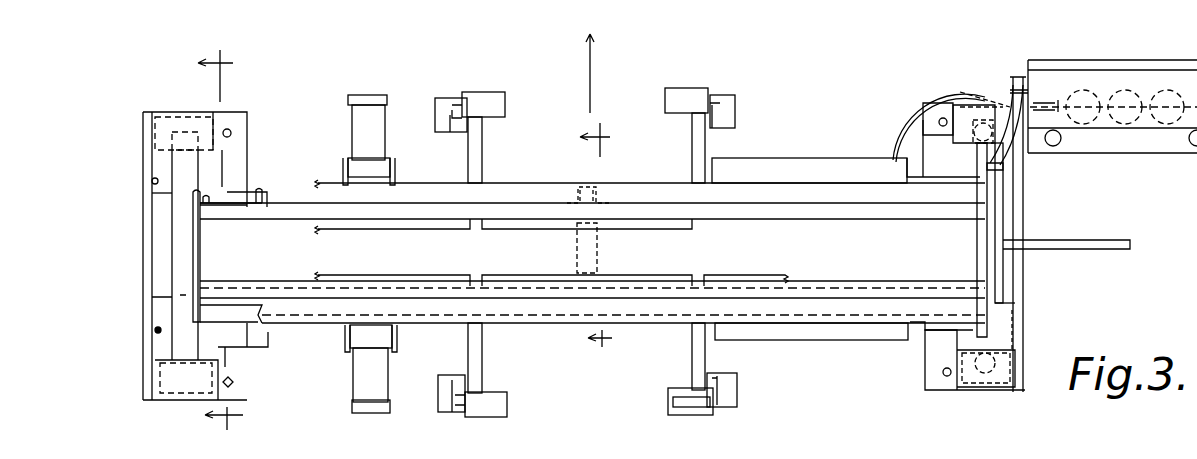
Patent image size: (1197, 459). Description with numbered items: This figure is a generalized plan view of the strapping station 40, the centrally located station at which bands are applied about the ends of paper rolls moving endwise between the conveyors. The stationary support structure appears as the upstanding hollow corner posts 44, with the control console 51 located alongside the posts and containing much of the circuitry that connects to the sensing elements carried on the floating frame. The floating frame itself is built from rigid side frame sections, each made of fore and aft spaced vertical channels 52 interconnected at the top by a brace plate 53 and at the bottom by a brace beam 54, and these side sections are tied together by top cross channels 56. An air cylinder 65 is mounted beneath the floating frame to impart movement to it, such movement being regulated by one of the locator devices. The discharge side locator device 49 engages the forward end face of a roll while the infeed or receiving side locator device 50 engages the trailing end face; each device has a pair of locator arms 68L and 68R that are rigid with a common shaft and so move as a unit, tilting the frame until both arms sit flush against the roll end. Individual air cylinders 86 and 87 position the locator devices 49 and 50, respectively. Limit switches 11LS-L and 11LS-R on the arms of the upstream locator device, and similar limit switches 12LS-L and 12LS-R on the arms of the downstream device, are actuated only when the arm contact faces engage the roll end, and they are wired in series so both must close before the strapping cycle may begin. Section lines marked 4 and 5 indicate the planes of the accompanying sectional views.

The strapping station 40 is at (1050, 200).
The upstanding hollow corner posts 44 is at (175, 112).
The discharge side locator device 49 is at (712, 140).
The infeed or receiving side locator device 50 is at (710, 358).
The control console 51 is at (1123, 58).
The vertical channels 52 is at (218, 205).
The brace plate 53 is at (190, 241).
The brace beam 54 is at (183, 240).
The top cross channels 56 is at (385, 213).
The air cylinder 65 is at (600, 250).
The locator arm 68L is at (478, 150).
The locator arm 68R is at (692, 125).
The air cylinder 86 is at (380, 141).
The air cylinder 87 is at (382, 384).
The limit switch 12LS-L is at (445, 120).
The limit switch 12LS-R is at (733, 110).
The limit switch 11LS-L is at (445, 385).
The limit switch 11LS-R is at (735, 385).
The section line 4- 4 is at (598, 200).
The section line 5- 5 is at (222, 238).